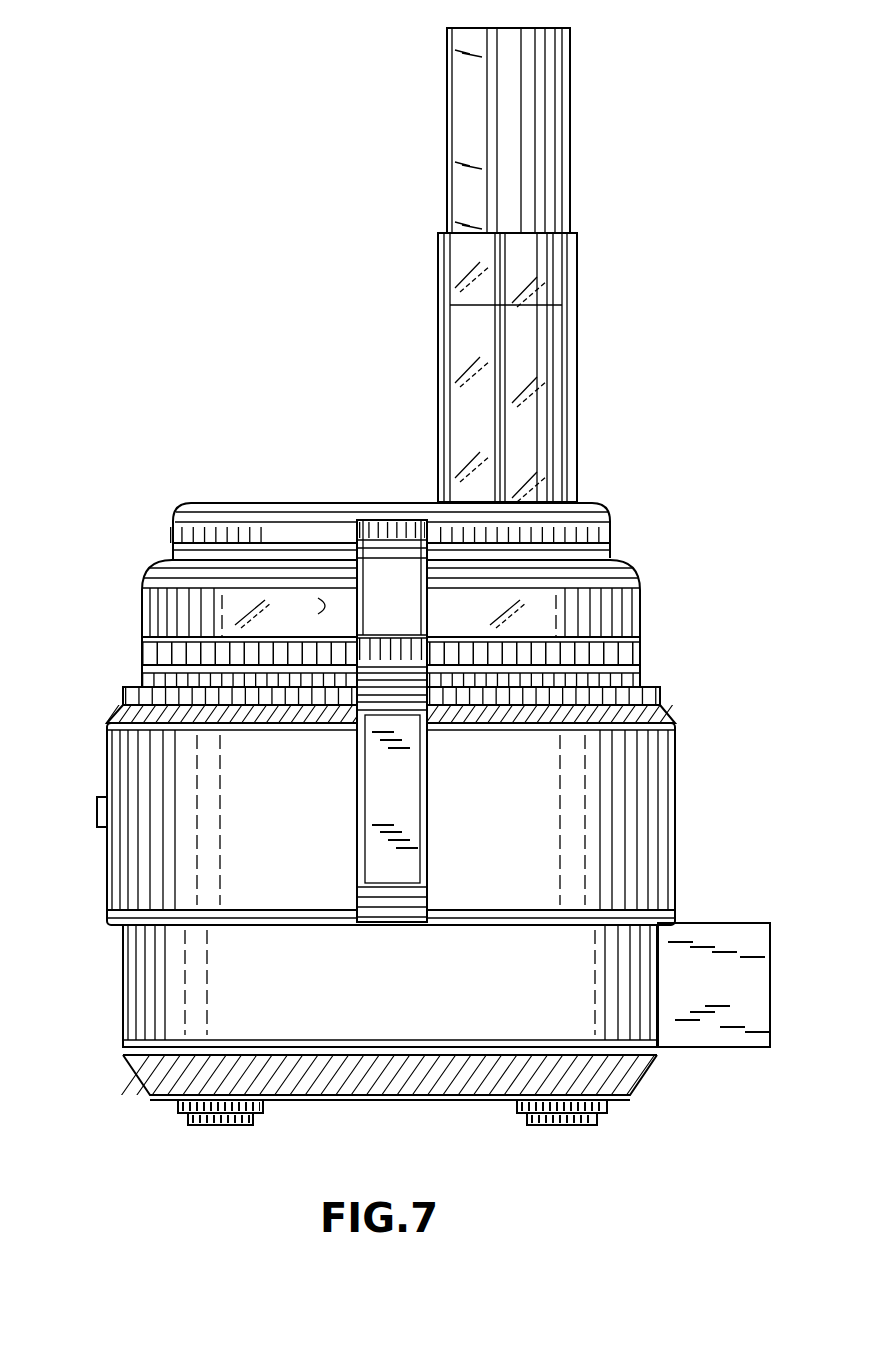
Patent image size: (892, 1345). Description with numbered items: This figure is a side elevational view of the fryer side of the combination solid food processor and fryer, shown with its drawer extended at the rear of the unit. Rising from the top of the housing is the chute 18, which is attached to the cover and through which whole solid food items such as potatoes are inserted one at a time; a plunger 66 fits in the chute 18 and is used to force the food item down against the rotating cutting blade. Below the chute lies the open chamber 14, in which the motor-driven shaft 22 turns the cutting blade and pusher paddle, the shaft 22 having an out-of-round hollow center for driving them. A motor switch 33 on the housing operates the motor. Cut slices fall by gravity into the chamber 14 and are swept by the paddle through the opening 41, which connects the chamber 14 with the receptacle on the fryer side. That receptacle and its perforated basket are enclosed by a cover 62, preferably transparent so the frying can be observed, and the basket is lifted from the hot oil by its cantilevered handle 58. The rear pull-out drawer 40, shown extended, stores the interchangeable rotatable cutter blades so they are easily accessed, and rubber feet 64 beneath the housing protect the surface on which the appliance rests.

The open chamber 14 is at (172, 542).
The chute 18 is at (577, 400).
The shaft 22 is at (415, 520).
The motor switch 33 is at (98, 812).
The rear pull-out drawer 40 is at (770, 965).
The opening 41 is at (320, 612).
The handle 58 is at (357, 808).
The cover 62 is at (620, 556).
The rubber feet 64 is at (255, 1125).
The plunger 66 is at (570, 190).